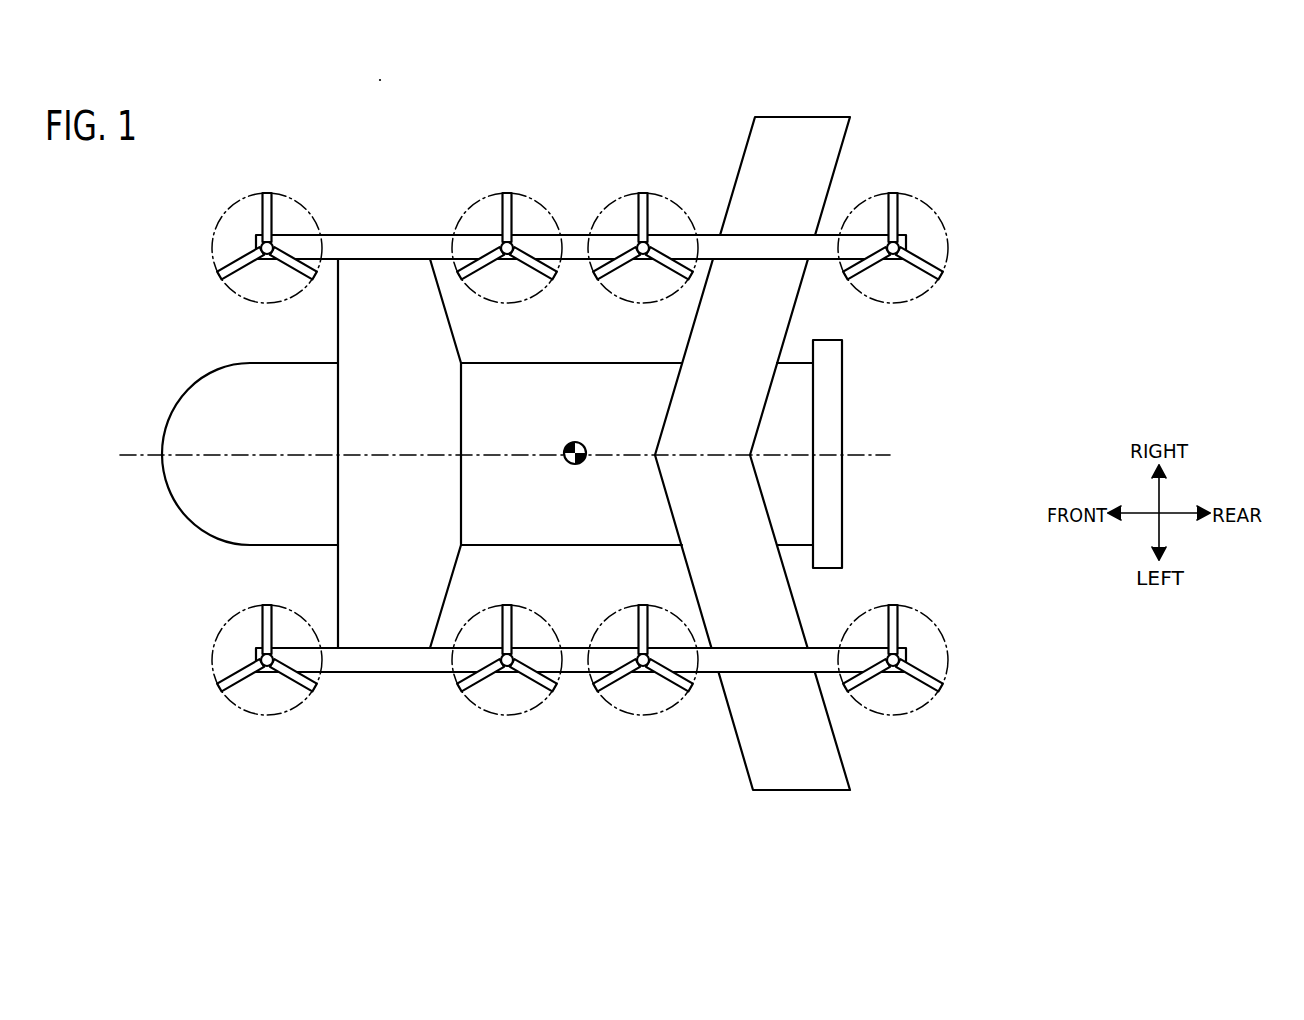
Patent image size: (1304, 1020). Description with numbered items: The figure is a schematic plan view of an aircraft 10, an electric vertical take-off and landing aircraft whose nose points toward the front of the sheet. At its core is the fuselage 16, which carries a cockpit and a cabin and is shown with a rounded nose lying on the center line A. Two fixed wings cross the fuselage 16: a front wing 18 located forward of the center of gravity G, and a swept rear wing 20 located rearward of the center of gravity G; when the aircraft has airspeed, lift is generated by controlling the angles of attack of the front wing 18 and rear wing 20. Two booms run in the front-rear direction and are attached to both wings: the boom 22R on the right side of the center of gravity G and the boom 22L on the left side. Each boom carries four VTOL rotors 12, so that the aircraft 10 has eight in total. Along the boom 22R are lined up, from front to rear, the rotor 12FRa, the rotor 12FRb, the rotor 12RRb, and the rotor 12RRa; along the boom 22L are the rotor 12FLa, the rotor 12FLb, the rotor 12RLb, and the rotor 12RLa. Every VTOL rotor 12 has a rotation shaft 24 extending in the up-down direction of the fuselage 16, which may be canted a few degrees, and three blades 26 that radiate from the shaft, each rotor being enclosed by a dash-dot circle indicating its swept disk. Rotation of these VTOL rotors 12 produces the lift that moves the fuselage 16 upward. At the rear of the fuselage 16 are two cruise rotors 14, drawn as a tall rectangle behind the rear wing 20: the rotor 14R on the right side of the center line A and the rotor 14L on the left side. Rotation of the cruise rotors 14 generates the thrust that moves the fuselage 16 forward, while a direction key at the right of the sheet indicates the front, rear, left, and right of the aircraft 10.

The aircraft 10 is at (84, 212).
The VTOL rotor 12 is at (647, 455).
The rotor 12FRa is at (267, 193).
The rotor 12FRb is at (507, 193).
The rotor 12RRb is at (643, 193).
The rotor 12RRa is at (905, 197).
The rotor 12FLa is at (296, 683).
The rotor 12FLb is at (458, 687).
The rotor 12RLb is at (612, 688).
The rotor 12RLa is at (942, 690).
The cruise rotor 14 is at (894, 454).
The rotor 14R is at (843, 402).
The rotor 14L is at (843, 510).
The fuselage 16 is at (168, 421).
The front wing 18 is at (376, 283).
The rear wing 20 is at (795, 117).
The boom 22R is at (752, 235).
The boom 22L is at (752, 672).
The rotation shaft 24 is at (268, 255).
The blade 26 is at (227, 268).
The center line A is at (495, 458).
The center of gravity G is at (566, 461).